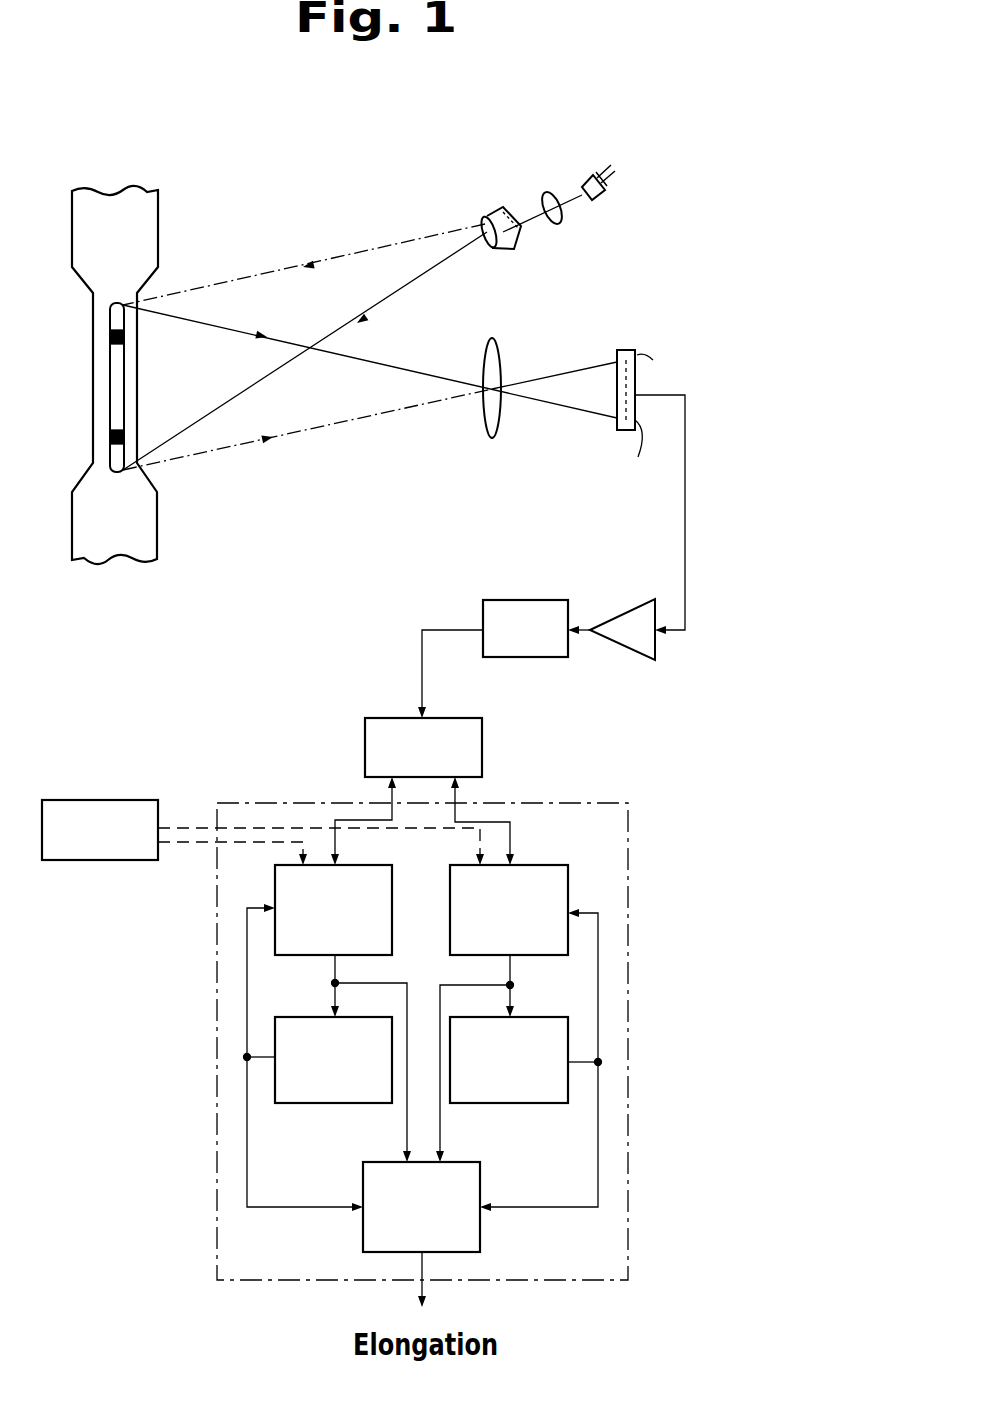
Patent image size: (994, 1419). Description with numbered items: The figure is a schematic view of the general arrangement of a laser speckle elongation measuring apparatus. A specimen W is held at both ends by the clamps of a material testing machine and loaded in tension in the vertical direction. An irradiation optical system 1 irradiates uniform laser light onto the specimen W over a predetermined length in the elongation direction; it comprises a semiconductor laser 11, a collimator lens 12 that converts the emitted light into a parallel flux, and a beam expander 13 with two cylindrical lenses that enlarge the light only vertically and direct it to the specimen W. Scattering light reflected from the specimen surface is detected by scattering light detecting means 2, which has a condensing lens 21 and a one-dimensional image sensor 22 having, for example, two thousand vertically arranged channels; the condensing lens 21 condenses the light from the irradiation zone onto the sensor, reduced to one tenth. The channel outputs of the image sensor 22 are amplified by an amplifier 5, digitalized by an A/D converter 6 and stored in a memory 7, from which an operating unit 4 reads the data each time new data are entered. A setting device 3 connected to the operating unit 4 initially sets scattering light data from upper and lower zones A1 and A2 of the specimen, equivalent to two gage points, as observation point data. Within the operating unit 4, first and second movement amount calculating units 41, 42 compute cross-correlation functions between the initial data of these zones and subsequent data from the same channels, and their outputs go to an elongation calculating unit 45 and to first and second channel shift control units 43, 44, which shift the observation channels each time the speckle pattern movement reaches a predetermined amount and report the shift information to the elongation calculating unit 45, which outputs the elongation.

The irradiation optical system 1 is at (388, 317).
The semiconductor laser 11 is at (595, 205).
The collimator lens 12 is at (565, 215).
The beam expander 13 is at (513, 250).
The scattering light detecting means 2 is at (429, 461).
The condensing lens 21 is at (497, 362).
The one-dimensional image sensor 22 is at (627, 350).
The amplifier 5 is at (637, 603).
The A/D converter 6 is at (533, 600).
The memory 7 is at (482, 742).
The setting device 3 is at (98, 858).
The operating unit 4 is at (592, 813).
The first movement amount calculating unit 41 is at (395, 900).
The second movement amount calculating unit 42 is at (548, 867).
The first channel shift control unit 43 is at (312, 1010).
The second channel shift control unit 44 is at (553, 1000).
The elongation calculating unit 45 is at (466, 1162).
The specimen W is at (142, 232).
The upper zone A1 is at (124, 340).
The lower zone A2 is at (124, 437).